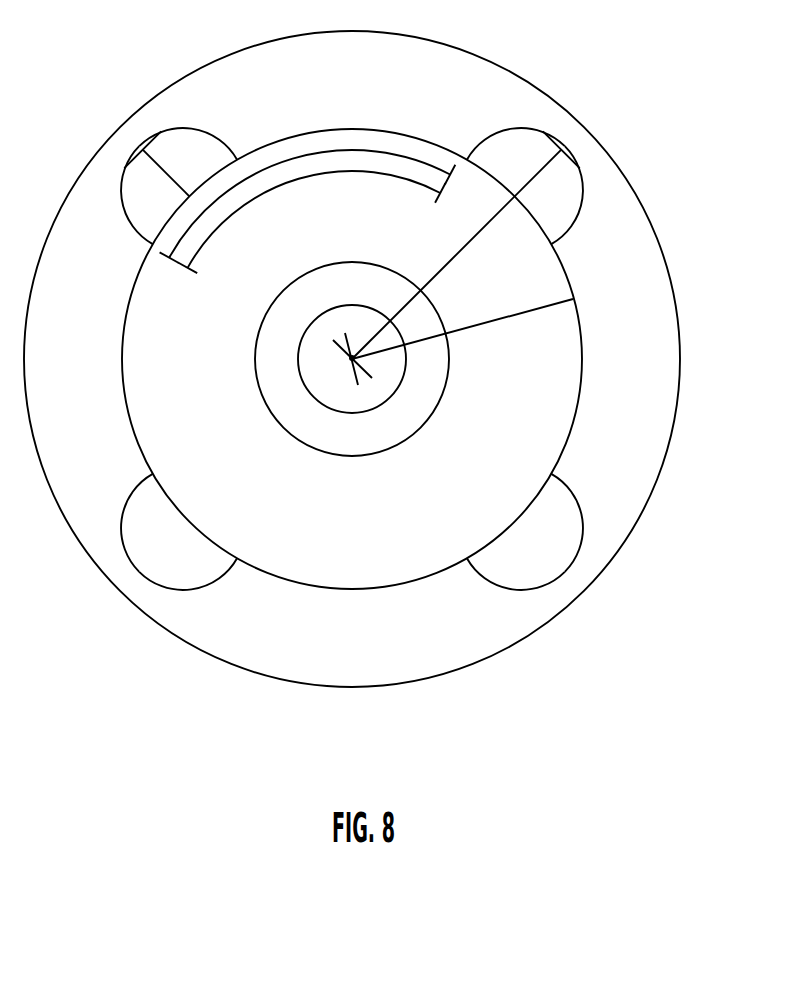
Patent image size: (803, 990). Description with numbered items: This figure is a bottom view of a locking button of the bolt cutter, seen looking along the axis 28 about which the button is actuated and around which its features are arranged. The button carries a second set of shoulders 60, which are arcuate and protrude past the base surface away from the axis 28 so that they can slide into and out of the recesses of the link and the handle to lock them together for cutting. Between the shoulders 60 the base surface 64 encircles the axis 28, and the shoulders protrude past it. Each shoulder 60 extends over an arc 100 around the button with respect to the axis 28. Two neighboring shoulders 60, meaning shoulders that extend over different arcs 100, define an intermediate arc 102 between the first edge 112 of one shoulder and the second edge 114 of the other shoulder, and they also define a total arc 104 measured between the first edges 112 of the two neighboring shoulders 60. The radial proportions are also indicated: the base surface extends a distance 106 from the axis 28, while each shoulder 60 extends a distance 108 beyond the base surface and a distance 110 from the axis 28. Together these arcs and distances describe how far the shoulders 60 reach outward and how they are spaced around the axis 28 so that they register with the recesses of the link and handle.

The axis 28 is at (352, 358).
The second set of shoulders 60 is at (354, 337).
The base surface 64 is at (331, 128).
The arc 100 is at (308, 168).
The intermediate arc 102 is at (387, 152).
The total arc 104 is at (363, 172).
The distance 106 is at (547, 305).
The distance 108 is at (168, 172).
The distance 110 is at (565, 277).
The first edge 112 is at (147, 247).
The second edge 114 is at (228, 144).